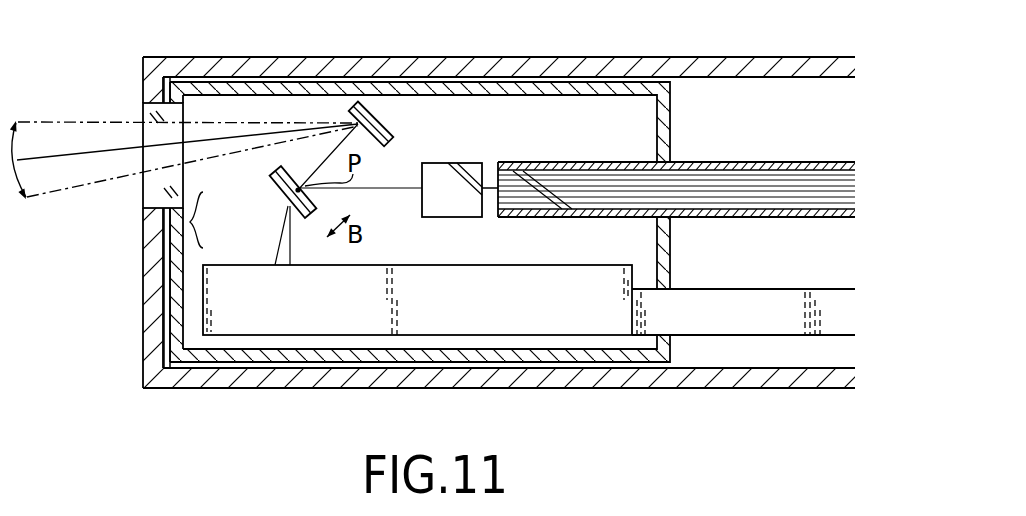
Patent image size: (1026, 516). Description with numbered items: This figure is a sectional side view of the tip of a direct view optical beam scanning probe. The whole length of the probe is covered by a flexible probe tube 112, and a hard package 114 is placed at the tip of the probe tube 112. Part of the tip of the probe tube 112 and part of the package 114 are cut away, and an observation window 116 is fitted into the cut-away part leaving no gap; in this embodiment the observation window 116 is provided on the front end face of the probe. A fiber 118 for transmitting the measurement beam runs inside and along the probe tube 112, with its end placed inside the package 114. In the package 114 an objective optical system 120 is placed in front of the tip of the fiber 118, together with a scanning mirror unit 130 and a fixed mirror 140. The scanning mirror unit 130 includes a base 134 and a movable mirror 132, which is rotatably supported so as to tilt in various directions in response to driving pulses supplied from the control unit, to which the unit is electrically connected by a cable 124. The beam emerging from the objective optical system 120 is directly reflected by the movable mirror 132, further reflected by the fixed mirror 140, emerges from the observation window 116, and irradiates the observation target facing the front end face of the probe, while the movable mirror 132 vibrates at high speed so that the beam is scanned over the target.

The probe tube 112 is at (798, 40).
The package 114 is at (600, 86).
The observation window 116 is at (138, 193).
The fiber 118 is at (775, 217).
The objective optical system 120 is at (446, 207).
The cable 124 is at (743, 335).
The scanning mirror unit 130 is at (185, 222).
The movable mirror 132 is at (280, 194).
The base 134 is at (253, 290).
The fixed mirror 140 is at (395, 124).